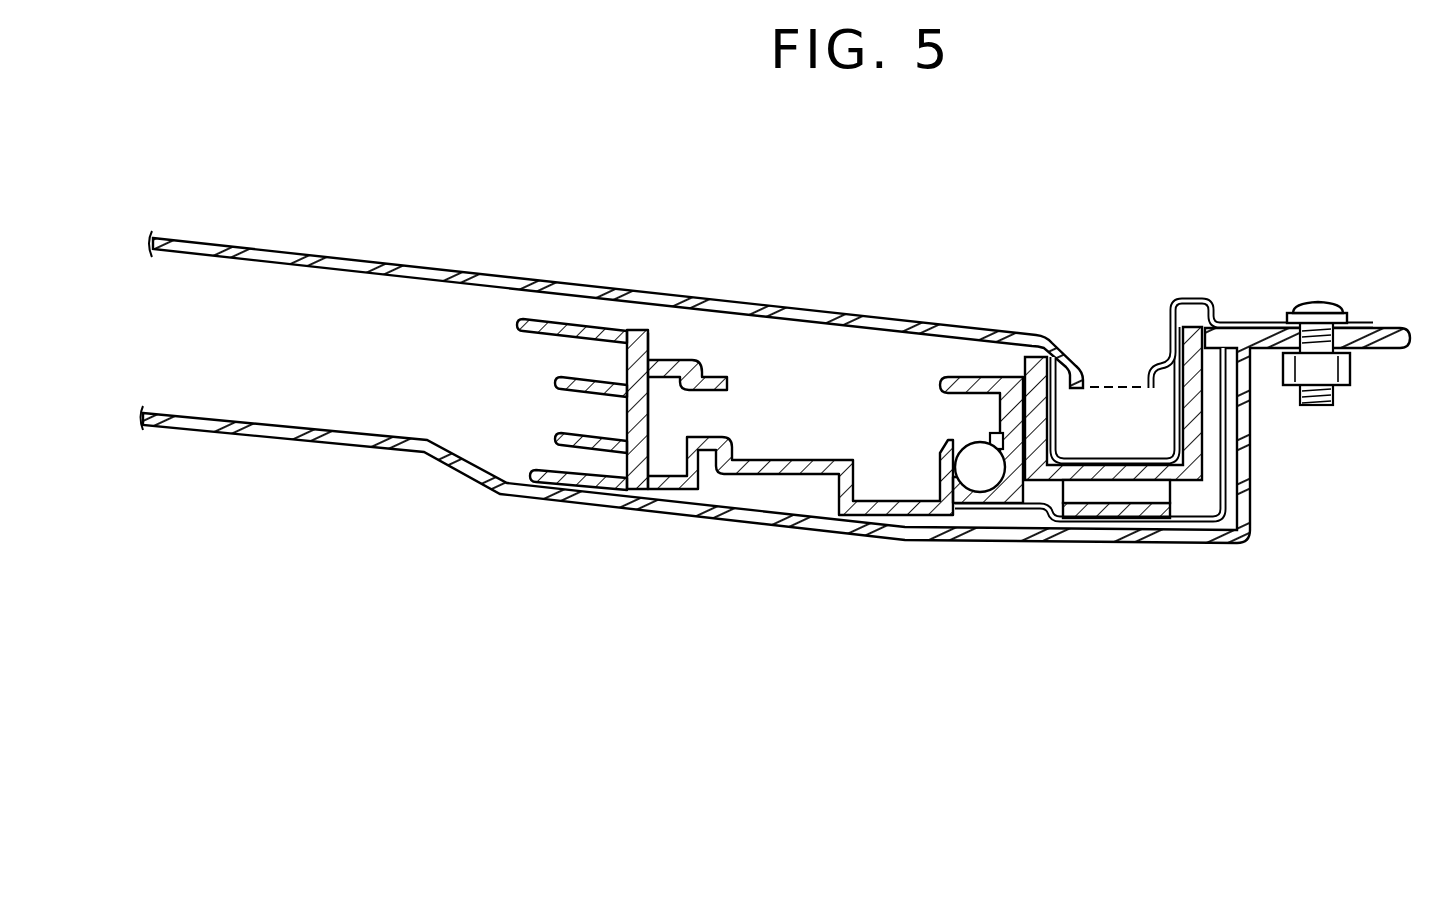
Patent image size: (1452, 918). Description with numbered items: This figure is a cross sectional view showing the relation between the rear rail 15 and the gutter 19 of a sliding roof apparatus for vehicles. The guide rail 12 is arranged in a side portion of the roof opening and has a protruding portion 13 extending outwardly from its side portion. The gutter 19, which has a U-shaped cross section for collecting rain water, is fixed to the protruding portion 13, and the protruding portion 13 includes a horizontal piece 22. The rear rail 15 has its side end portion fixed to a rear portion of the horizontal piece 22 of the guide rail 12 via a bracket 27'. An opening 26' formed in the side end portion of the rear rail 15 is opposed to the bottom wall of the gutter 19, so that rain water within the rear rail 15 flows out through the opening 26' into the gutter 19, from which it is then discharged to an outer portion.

The guide rail 12 is at (893, 510).
The protruding portion 13 is at (1205, 495).
The rear rail 15 is at (975, 325).
The gutter 19 is at (1117, 482).
The horizontal piece 22 is at (1400, 350).
The opening 26' is at (1117, 305).
The bracket 27' is at (1262, 296).